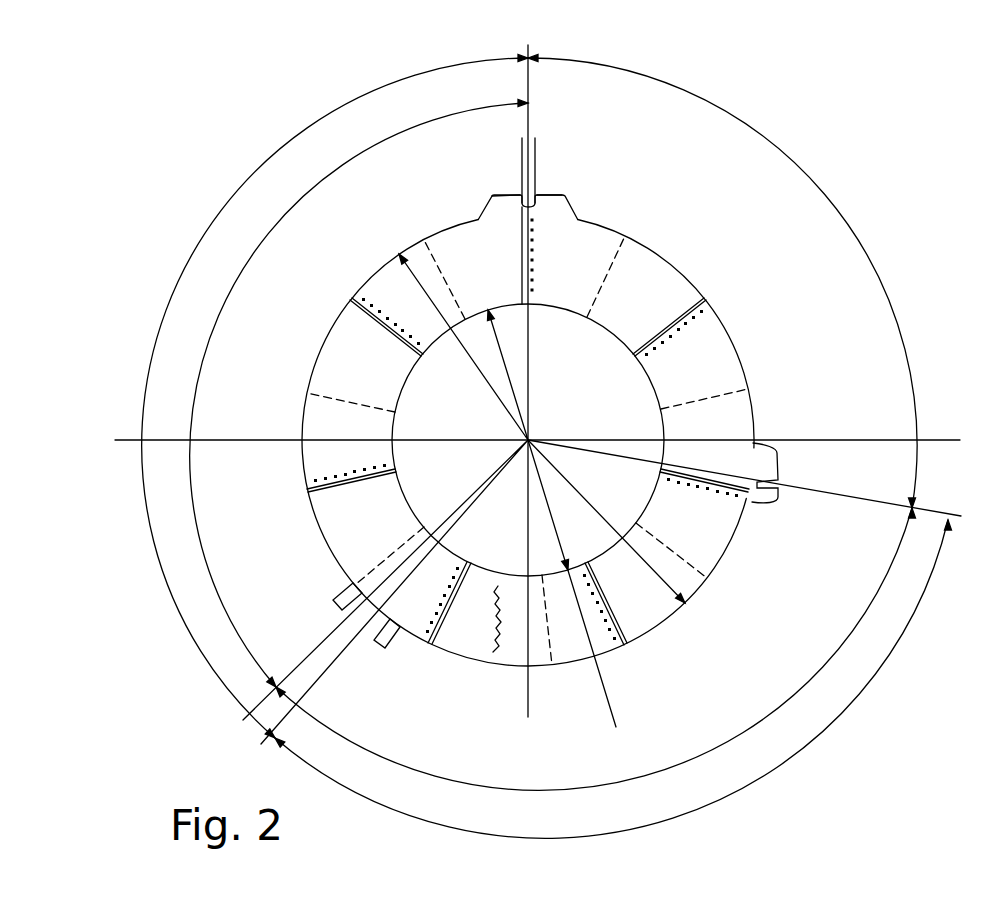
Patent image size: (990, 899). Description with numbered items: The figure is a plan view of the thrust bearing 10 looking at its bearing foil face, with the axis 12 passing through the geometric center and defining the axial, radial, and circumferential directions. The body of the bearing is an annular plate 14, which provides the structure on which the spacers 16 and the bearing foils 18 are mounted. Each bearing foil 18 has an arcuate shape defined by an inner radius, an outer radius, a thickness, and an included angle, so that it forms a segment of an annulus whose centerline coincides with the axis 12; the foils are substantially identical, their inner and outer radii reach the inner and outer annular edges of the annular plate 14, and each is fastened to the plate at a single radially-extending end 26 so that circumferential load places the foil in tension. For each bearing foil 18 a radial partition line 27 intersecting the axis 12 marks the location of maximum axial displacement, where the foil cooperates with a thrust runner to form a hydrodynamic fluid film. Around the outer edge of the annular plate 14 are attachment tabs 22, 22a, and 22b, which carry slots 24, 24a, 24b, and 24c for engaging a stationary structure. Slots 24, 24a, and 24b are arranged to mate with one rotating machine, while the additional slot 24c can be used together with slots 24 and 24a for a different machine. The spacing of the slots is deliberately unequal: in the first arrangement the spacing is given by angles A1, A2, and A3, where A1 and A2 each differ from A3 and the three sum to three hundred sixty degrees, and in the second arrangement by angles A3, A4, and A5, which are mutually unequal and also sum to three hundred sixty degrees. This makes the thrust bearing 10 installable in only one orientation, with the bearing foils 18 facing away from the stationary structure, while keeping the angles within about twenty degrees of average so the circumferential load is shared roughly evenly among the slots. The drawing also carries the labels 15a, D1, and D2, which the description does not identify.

The thrust bearing 10 is at (847, 86).
The axis 12 is at (540, 428).
The annular plate 14 is at (545, 208).
The pole side surface 15a is at (484, 574).
The spacer 16 is at (494, 640).
The bearing foil 18 is at (708, 362).
The attachment tab 22 is at (785, 490).
The attachment tab 22a is at (530, 166).
The attachment tab 22b is at (358, 622).
The slot 24 is at (770, 470).
The slot 24a is at (548, 225).
The slot 24b is at (395, 648).
The additional slot 24c is at (336, 598).
The radially-extending end 26 is at (628, 642).
The radial partition line 27 is at (447, 290).
The angle A1 is at (281, 232).
The angle A2 is at (738, 722).
The angle A3 is at (878, 268).
The angle A4 is at (200, 242).
The angle A5 is at (772, 772).
The diameter line D1 is at (594, 592).
The diameter line D2 is at (738, 540).